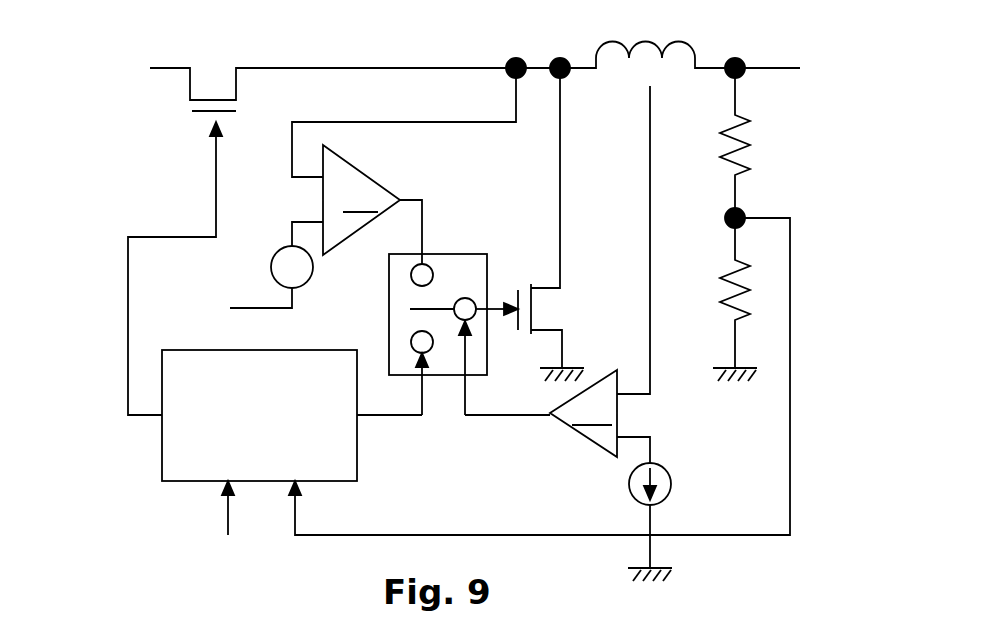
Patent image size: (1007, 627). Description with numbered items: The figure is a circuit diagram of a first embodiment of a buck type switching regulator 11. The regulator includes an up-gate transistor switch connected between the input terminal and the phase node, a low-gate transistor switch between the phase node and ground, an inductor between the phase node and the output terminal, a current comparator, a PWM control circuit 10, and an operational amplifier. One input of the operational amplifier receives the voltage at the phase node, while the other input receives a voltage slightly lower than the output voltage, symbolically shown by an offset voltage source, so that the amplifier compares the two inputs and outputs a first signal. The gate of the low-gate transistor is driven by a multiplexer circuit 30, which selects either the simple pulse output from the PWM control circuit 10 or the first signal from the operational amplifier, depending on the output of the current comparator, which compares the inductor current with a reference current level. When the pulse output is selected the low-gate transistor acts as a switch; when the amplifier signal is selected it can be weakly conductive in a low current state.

The PWM control circuit 10 is at (278, 451).
The buck type switching regulator 11 is at (142, 500).
The multiplexer circuit 30 is at (489, 266).